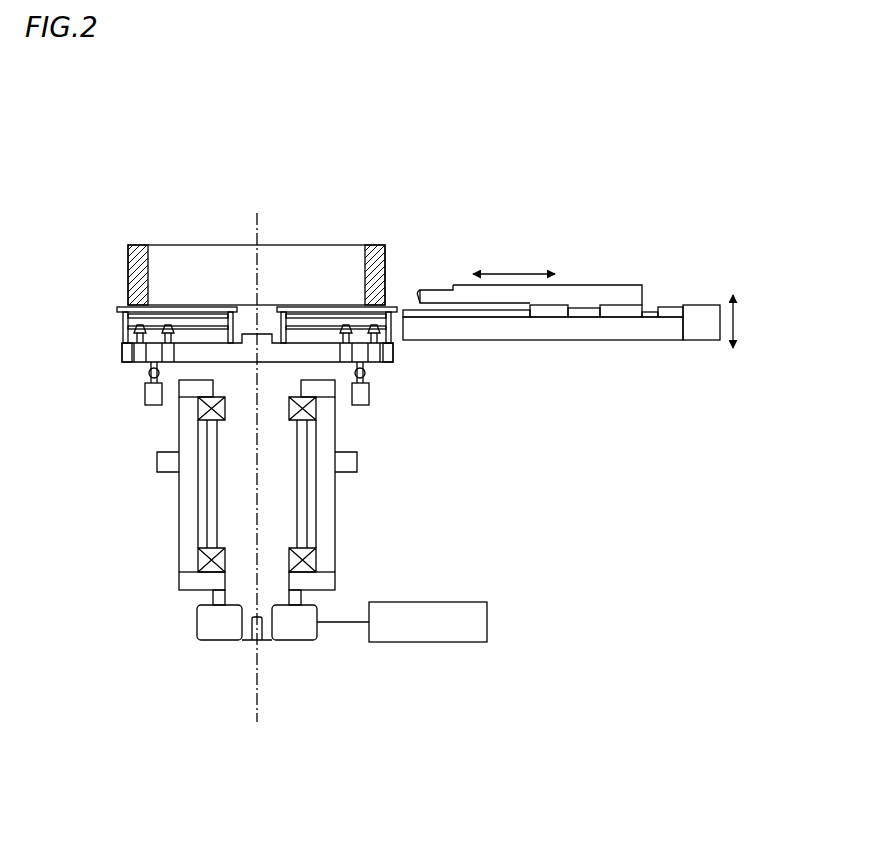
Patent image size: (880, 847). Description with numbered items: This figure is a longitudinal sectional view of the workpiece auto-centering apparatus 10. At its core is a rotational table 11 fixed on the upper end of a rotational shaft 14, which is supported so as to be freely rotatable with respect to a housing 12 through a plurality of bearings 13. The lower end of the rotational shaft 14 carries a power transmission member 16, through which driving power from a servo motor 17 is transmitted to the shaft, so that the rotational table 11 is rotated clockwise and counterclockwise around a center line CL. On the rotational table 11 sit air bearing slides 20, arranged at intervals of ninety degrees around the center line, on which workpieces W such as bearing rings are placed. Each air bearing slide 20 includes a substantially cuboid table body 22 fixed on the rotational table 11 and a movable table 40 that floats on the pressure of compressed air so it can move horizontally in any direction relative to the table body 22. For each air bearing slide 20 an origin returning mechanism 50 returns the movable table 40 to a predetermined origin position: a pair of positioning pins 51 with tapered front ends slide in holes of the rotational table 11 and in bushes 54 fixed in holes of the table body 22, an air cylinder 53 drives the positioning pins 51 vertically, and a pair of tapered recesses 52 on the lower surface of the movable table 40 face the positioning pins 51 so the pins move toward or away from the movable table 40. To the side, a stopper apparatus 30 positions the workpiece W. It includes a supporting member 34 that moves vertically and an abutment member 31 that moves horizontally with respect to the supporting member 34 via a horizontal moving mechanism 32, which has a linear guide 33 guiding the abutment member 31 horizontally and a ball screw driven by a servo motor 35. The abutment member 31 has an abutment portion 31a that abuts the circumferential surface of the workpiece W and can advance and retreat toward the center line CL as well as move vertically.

The workpiece auto-centering apparatus 10 is at (557, 128).
The rotational table 11 is at (385, 353).
The housing 12 is at (340, 463).
The bearings 13 is at (316, 406).
The rotational shaft 14 is at (303, 510).
The power transmission member 16 is at (295, 628).
The servo motor 17 is at (463, 640).
The air bearing slide 20 is at (173, 302).
The table body 22 is at (196, 335).
The stopper apparatus 30 is at (645, 250).
The abutment member 31 is at (581, 293).
The abutment portion 31a is at (418, 292).
The horizontal moving mechanism 32 is at (690, 296).
The linear guide 33 is at (627, 313).
The supporting member 34 is at (633, 330).
The servo motor 35 is at (702, 330).
The movable table 40 is at (212, 305).
The origin returning mechanism 50 is at (133, 385).
The positioning pins 51 is at (122, 353).
The tapered recesses 52 is at (140, 308).
The air cylinder 53 is at (152, 396).
The bushes 54 is at (137, 331).
The workpiece W is at (372, 253).
The center line CL is at (258, 708).